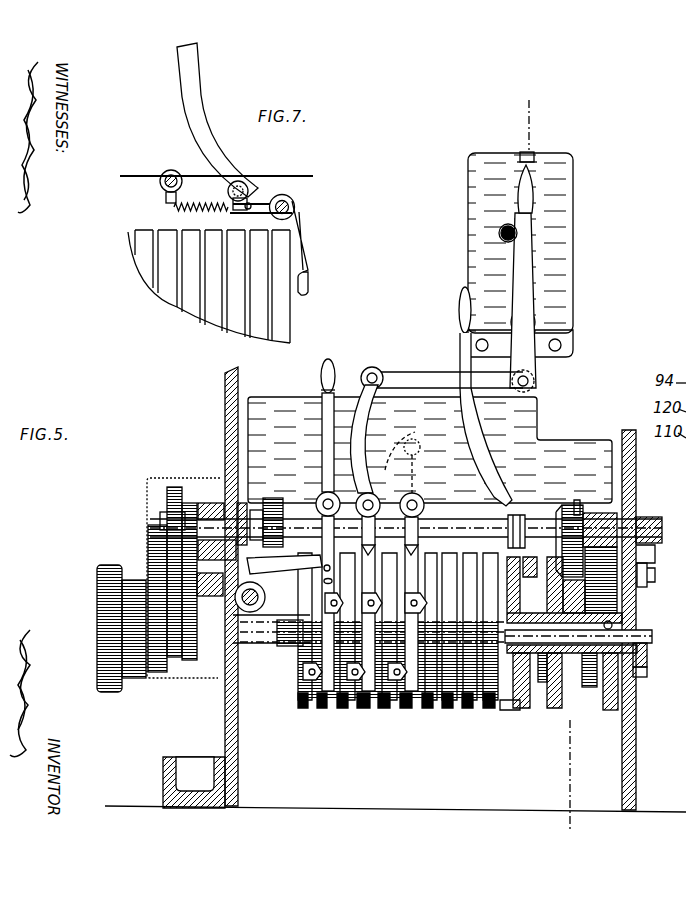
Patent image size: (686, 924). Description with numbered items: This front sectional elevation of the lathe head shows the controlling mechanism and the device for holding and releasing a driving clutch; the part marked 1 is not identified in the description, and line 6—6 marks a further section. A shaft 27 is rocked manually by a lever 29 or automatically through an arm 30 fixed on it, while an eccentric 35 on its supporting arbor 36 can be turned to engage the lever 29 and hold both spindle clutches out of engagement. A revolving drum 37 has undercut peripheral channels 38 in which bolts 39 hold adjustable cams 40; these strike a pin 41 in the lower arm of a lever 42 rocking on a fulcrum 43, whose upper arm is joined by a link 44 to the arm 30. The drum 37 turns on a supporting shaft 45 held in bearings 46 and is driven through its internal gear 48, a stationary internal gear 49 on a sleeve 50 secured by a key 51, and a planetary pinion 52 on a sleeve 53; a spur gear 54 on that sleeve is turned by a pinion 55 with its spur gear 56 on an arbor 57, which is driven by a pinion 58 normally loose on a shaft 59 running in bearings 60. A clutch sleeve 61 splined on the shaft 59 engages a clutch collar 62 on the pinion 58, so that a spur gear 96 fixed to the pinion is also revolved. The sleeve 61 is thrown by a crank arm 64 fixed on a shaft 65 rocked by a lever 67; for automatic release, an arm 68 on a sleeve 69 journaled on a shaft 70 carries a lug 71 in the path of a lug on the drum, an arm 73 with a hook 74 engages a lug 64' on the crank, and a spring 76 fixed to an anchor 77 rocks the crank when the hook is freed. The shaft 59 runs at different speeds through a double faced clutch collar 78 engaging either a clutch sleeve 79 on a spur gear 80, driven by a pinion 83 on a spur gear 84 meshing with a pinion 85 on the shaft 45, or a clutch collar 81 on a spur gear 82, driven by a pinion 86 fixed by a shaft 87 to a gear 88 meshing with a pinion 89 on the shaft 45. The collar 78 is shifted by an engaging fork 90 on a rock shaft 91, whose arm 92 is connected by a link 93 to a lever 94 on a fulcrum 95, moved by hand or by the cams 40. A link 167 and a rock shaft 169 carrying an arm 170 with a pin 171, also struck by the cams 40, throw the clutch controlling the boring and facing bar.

In FIG. 5, the frame side plate 1 is at (226, 422).
In FIG. 5, the section line 6— 6 is at (553, 463).
In FIG. 5, the shaft 27 is at (535, 318).
In FIG. 5, the lever 29 is at (523, 193).
In FIG. 5, the arm 30 is at (525, 350).
In FIG. 5, the eccentric 35 is at (502, 240).
In FIG. 5, the supporting arbor 36 is at (501, 232).
In FIG. 7, the revolving drum 37 is at (178, 312).
In FIG. 5, the revolving drum 37 is at (447, 712).
In FIG. 5, the under cut peripheral channels 38 is at (522, 712).
In FIG. 5, the bolts 39 is at (310, 680).
In FIG. 5, the cams 40 is at (303, 670).
In FIG. 5, the pin 41 is at (375, 565).
In FIG. 5, the lever 42 is at (368, 420).
In FIG. 5, the fulcrum 43 is at (370, 495).
In FIG. 5, the link 44 is at (414, 377).
In FIG. 5, the supporting shaft 45 is at (648, 656).
In FIG. 5, the bearings 46 is at (650, 672).
In FIG. 5, the internal gear 48 is at (572, 715).
In FIG. 5, the stationary internal gear 49 is at (545, 690).
In FIG. 5, the sleeve 50 is at (640, 620).
In FIG. 5, the key 51 is at (626, 607).
In FIG. 5, the planetary pinion 52 is at (507, 602).
In FIG. 5, the sleeve 53 is at (575, 665).
In FIG. 5, the spur gear 54 is at (598, 680).
In FIG. 5, the pinion 55 is at (640, 590).
In FIG. 5, the spur gear 56 is at (612, 560).
In FIG. 5, the arbor 57 is at (652, 574).
In FIG. 5, the pinion 58 is at (608, 515).
In FIG. 5, the shaft 59 is at (447, 527).
In FIG. 5, the bearings 60 is at (650, 520).
In FIG. 5, the clutch sleeve 61 is at (528, 515).
In FIG. 5, the clutch collar 62 is at (562, 512).
In FIG. 7, the crank arm 64 is at (264, 184).
In FIG. 7, the lug 64' is at (222, 196).
In FIG. 7, the shaft 65 is at (244, 186).
In FIG. 7, the lever 67 is at (189, 123).
In FIG. 5, the lever 67 is at (459, 308).
In FIG. 7, the arm 68 is at (306, 231).
In FIG. 7, the sleeve 69 is at (296, 204).
In FIG. 7, the shaft 70 is at (250, 206).
In FIG. 7, the lug 71 is at (310, 290).
In FIG. 7, the arm 73 is at (264, 214).
In FIG. 7, the hook 74 is at (233, 214).
In FIG. 7, the spring 76 is at (203, 212).
In FIG. 7, the anchor 77 is at (172, 208).
In FIG. 5, the double faced clutch collar 78 is at (250, 503).
In FIG. 5, the clutch sleeve 79 is at (190, 503).
In FIG. 5, the spur gear 80 is at (170, 487).
In FIG. 5, the clutch collar 81 is at (268, 508).
In FIG. 5, the spur gear 82 is at (280, 510).
In FIG. 5, the pinion 83 is at (150, 590).
In FIG. 5, the spur gear 84 is at (158, 545).
In FIG. 5, the pinion 85 is at (157, 655).
In FIG. 5, the pinion 86 is at (290, 646).
In FIG. 5, the journaled shaft 87 is at (215, 590).
In FIG. 5, the gear 88 is at (160, 522).
In FIG. 5, the pinion 89 is at (183, 660).
In FIG. 5, the engaging fork 90 is at (275, 558).
In FIG. 5, the rock shaft 91 is at (255, 643).
In FIG. 5, the arm 92 is at (256, 600).
In FIG. 5, the link 93 is at (300, 580).
In FIG. 5, the lever 94 is at (321, 385).
In FIG. 5, the fulcrum 95 is at (322, 490).
In FIG. 5, the spur gear 96 is at (585, 500).
In FIG. 5, the link 167 is at (421, 432).
In FIG. 5, the rock shaft 169 is at (418, 494).
In FIG. 5, the arm 170 is at (418, 522).
In FIG. 5, the pin 171 is at (420, 560).